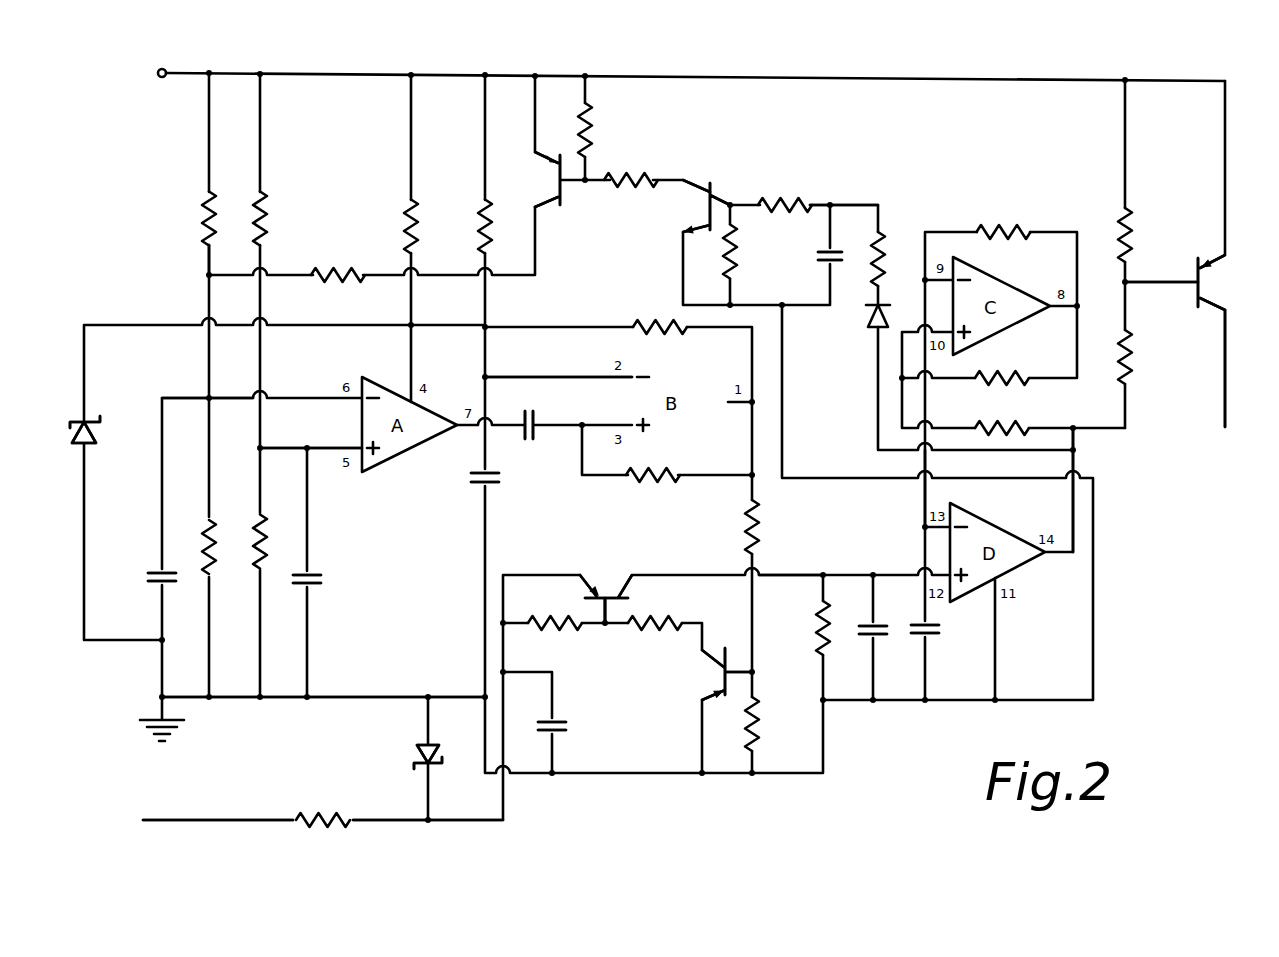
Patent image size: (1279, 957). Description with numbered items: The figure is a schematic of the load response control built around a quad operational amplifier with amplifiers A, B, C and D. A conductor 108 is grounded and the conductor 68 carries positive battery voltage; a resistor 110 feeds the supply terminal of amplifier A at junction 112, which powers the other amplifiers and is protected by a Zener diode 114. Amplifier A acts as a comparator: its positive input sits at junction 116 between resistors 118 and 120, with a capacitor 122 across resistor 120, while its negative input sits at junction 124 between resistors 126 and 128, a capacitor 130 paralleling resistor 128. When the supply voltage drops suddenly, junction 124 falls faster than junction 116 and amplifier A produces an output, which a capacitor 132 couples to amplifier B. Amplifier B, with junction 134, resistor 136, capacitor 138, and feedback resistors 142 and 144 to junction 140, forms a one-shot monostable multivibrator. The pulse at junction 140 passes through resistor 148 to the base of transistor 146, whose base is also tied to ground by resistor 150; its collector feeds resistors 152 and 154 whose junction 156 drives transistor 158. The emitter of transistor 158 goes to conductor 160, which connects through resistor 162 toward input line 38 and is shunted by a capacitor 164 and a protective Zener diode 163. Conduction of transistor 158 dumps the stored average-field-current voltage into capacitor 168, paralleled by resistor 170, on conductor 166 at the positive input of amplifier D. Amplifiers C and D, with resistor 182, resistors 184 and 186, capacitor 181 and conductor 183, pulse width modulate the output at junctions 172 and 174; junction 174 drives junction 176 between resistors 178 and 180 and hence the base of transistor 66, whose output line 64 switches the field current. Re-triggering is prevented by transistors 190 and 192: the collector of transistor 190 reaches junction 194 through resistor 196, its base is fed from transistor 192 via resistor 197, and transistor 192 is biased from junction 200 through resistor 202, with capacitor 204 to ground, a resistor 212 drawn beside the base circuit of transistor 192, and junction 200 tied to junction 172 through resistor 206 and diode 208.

The conductor 38 is at (214, 819).
The output line 64 is at (1226, 408).
The transistor 66 is at (1210, 295).
The conductor 68 is at (352, 52).
The conductor 108 is at (408, 697).
The resistor 110 is at (409, 227).
The junction 112 is at (412, 325).
The Zener diode 114 is at (76, 435).
The junction 116 is at (263, 447).
The resistor 118 is at (268, 220).
The resistor 120 is at (268, 532).
The capacitor 122 is at (320, 581).
The junction 124 is at (209, 397).
The resistor 126 is at (203, 219).
The resistor 128 is at (207, 520).
The capacitor 130 is at (160, 572).
The capacitor 132 is at (522, 436).
The junction 134 is at (489, 377).
The resistor 136 is at (482, 233).
The capacitor 138 is at (480, 485).
The junction 140 is at (756, 403).
The resistor 142 is at (660, 327).
The resistor 144 is at (650, 478).
The NPN transistor 146 is at (716, 680).
The resistor 148 is at (760, 527).
The resistor 150 is at (758, 716).
The resistor 152 is at (548, 626).
The resistor 154 is at (653, 622).
The junction 156 is at (606, 626).
The transistor 158 is at (612, 590).
The conductor 160 is at (410, 819).
The resistor 162 is at (328, 818).
The Zener diode 163 is at (416, 752).
The capacitor 164 is at (566, 728).
The conductor 166 is at (790, 575).
The capacitor 168 is at (876, 638).
The resistor 170 is at (821, 620).
The junction 172 is at (1080, 480).
The junction 174 is at (1078, 433).
The junction 176 is at (1128, 281).
The resistor 178 is at (1132, 215).
The resistor 180 is at (1130, 357).
The capacitor 181 is at (930, 638).
The resistor 182 is at (1003, 428).
The conductor 183 is at (920, 490).
The resistor 184 is at (995, 230).
The resistor 186 is at (993, 378).
The transistor 190 is at (546, 207).
The transistor 192 is at (693, 193).
The junction 194 is at (207, 277).
The resistor 196 is at (313, 283).
The resistor 197 is at (617, 180).
The junction 200 is at (830, 205).
The resistor 202 is at (780, 202).
The capacitor 204 is at (822, 260).
The resistor 206 is at (882, 262).
The diode 208 is at (868, 318).
The resistor 212 is at (737, 254).